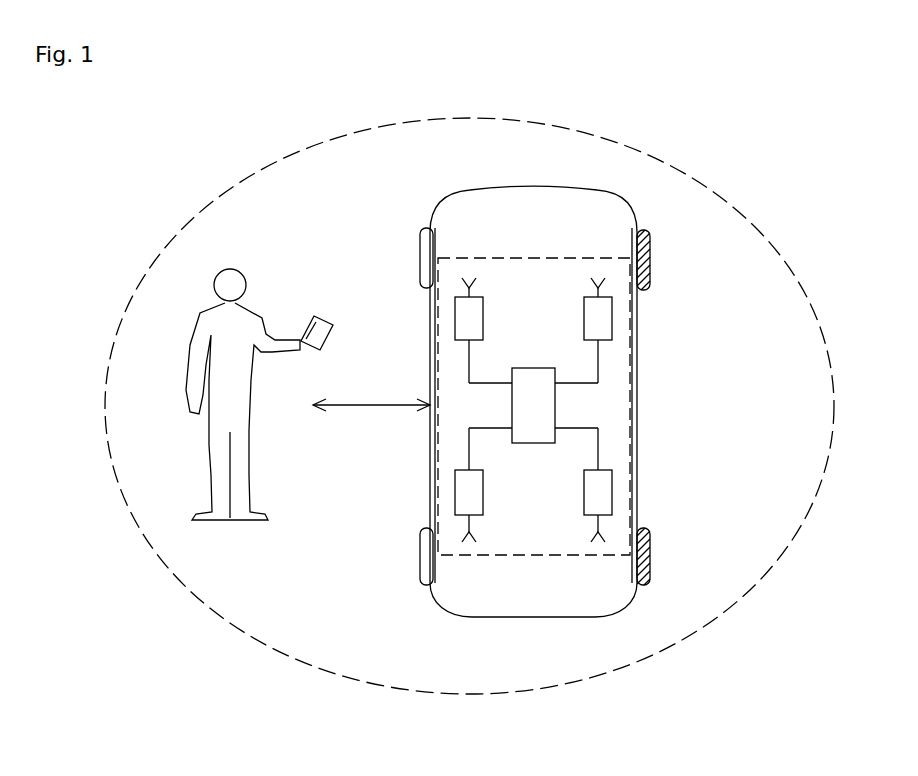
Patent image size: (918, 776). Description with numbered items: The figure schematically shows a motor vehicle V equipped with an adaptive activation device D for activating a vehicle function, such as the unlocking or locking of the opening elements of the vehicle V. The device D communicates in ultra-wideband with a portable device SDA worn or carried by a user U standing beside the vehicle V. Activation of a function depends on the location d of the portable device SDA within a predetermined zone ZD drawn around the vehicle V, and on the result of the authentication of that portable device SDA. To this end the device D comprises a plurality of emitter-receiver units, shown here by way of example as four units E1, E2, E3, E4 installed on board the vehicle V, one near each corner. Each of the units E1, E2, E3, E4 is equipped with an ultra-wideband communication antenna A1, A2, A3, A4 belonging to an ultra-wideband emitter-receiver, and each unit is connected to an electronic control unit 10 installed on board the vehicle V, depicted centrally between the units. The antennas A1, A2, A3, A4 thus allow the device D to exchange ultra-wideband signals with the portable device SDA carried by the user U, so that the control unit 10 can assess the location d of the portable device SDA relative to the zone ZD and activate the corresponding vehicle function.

The predetermined zone ZD is at (738, 212).
The motor vehicle V is at (517, 223).
The adaptive activation device D is at (633, 388).
The electronic control unit 10 is at (540, 400).
The emitter-receiver unit E1 is at (465, 318).
The emitter-receiver unit E2 is at (465, 493).
The emitter-receiver unit E3 is at (602, 493).
The emitter-receiver unit E4 is at (602, 318).
The ultra-wideband communication antenna A1 is at (469, 288).
The ultra-wideband communication antenna A2 is at (469, 532).
The ultra-wideband communication antenna A3 is at (598, 532).
The ultra-wideband communication antenna A4 is at (598, 288).
The location d is at (371, 393).
The user U is at (243, 470).
The portable device SDA is at (315, 320).